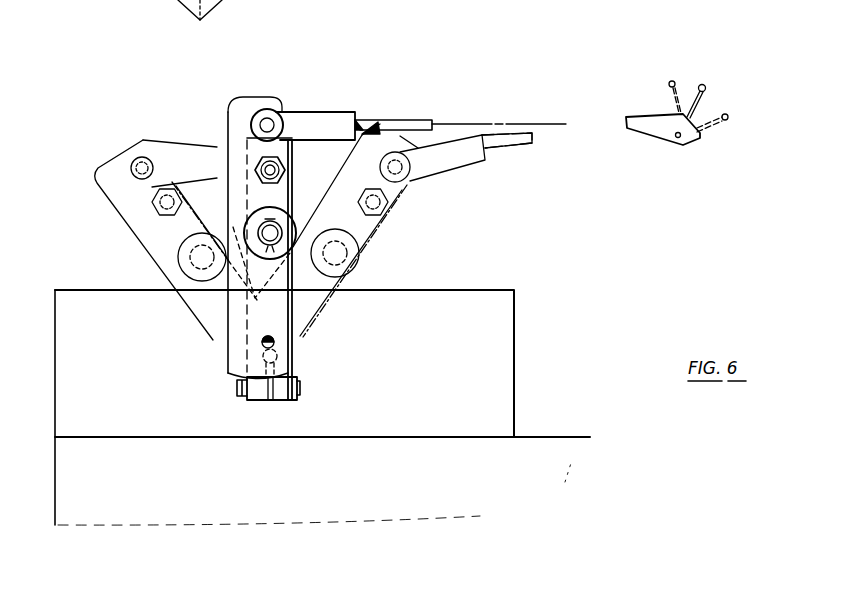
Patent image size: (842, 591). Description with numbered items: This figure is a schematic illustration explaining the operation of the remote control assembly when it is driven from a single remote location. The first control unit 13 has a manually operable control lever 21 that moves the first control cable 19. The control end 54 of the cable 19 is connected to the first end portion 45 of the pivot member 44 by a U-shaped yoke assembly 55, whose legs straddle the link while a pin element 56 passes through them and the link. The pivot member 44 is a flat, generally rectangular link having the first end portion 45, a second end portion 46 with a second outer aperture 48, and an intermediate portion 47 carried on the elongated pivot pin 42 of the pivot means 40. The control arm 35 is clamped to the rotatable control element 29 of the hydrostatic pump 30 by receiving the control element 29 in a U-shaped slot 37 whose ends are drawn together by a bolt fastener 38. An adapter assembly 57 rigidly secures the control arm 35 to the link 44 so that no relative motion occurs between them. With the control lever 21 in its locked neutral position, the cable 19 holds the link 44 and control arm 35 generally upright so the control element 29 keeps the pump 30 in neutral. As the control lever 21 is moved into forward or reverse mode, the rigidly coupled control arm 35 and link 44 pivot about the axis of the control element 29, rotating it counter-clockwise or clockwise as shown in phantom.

The first control unit 13 is at (689, 76).
The first control cable 19 is at (591, 122).
The control lever 21 is at (712, 88).
The control element 29 is at (278, 357).
The hydrostatic pump 30 is at (503, 318).
The control arm 35 is at (302, 392).
The U-shaped slot 37 is at (270, 402).
The bolt fastener 38 is at (238, 391).
The pivot means 40 is at (297, 219).
The pivot pin 42 is at (278, 235).
The pivot member 44 is at (214, 110).
The first end portion 45 is at (252, 97).
The second end portion 46 is at (236, 357).
The intermediate portion 47 is at (233, 228).
The second outer aperture 48 is at (273, 341).
The control end 54 is at (419, 119).
The U-shaped yoke assembly 55 is at (340, 112).
The pin element 56 is at (270, 118).
The adapter assembly 57 is at (260, 170).